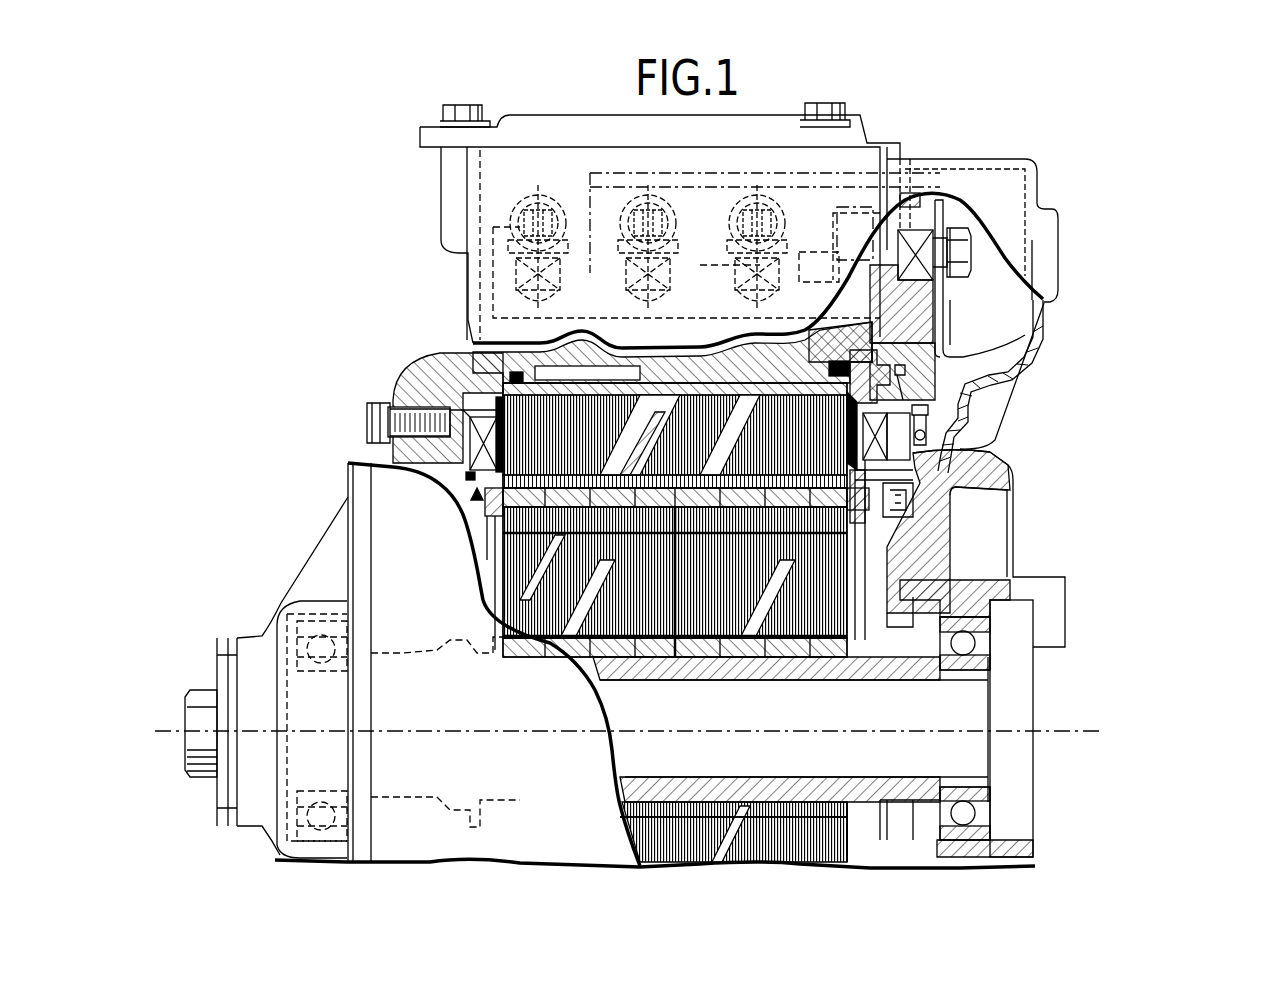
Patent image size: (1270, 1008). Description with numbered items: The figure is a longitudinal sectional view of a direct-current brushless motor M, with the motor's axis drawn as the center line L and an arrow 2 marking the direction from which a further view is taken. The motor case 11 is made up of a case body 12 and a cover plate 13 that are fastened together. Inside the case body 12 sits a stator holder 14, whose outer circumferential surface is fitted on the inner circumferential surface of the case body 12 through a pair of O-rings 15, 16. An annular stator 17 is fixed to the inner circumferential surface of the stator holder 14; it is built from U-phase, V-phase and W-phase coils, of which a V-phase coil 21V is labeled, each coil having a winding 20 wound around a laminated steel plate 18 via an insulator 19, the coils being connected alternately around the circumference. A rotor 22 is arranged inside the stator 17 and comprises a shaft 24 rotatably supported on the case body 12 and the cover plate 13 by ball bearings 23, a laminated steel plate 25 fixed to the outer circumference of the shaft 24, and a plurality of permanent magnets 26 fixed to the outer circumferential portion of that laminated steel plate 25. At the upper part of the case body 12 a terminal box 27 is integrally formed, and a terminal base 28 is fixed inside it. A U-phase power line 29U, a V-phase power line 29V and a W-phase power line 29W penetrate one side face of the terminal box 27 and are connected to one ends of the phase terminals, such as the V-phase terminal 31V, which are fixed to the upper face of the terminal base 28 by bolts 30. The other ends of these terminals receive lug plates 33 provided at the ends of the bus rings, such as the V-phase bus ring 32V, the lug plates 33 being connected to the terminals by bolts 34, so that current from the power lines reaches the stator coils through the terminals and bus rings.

The arrow 2 is at (1128, 532).
The motor case 11 is at (344, 594).
The case body 12 is at (407, 367).
The cover plate 13 is at (351, 470).
The stator holder 14 is at (690, 380).
The O-ring 15 is at (513, 372).
The O-ring 16 is at (855, 372).
The stator 17 is at (463, 487).
The laminated steel plate 18 is at (690, 455).
The insulator 19 is at (928, 425).
The winding 20 is at (470, 443).
The V-phase coil 21V is at (916, 451).
The rotor 22 is at (478, 588).
The ball bearing 23 is at (321, 649).
The shaft 24 is at (745, 670).
The laminated steel plate 25 is at (783, 603).
The permanent magnet 26 is at (645, 530).
The terminal box 27 is at (455, 188).
The terminal base 28 is at (625, 255).
The U-phase power line 29U is at (543, 203).
The V-phase power line 29V is at (654, 203).
The W-phase power line 29W is at (765, 203).
The bolt 30 is at (525, 212).
The V-phase terminal 31V is at (930, 222).
The V-phase bus ring 32V is at (1010, 381).
The lug plate 33 is at (952, 300).
The bolt 34 is at (965, 255).
The axis L is at (1095, 731).
The direct-current brushless motor M is at (402, 286).